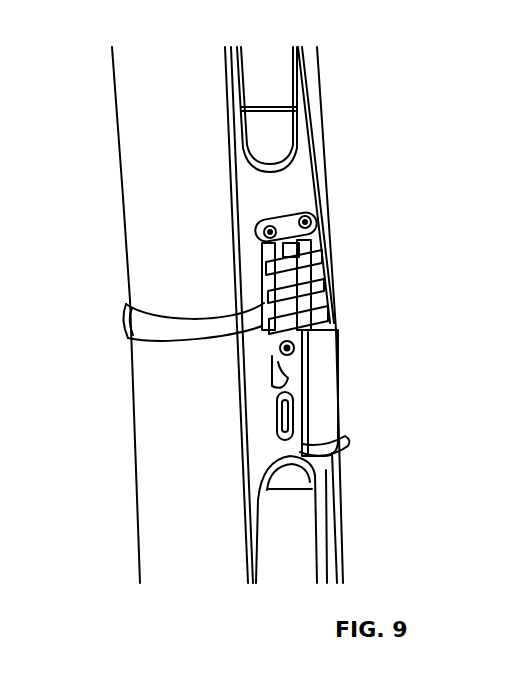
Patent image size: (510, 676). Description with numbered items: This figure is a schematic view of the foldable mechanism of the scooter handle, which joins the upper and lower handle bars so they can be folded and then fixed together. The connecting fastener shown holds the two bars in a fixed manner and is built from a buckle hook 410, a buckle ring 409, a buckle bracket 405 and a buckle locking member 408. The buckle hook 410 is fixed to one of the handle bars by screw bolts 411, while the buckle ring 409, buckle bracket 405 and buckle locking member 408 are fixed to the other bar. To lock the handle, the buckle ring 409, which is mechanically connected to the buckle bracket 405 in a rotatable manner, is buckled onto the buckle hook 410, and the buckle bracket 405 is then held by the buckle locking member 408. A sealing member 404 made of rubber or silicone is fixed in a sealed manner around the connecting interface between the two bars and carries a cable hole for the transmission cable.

The sealing member 404 is at (342, 287).
The buckle bracket 405 is at (345, 442).
The buckle locking member 408 is at (278, 425).
The buckle ring 409 is at (263, 340).
The buckle hook 410 is at (295, 200).
The screw bolts for fastening the buckle hook onto the handle bar 411 is at (320, 220).